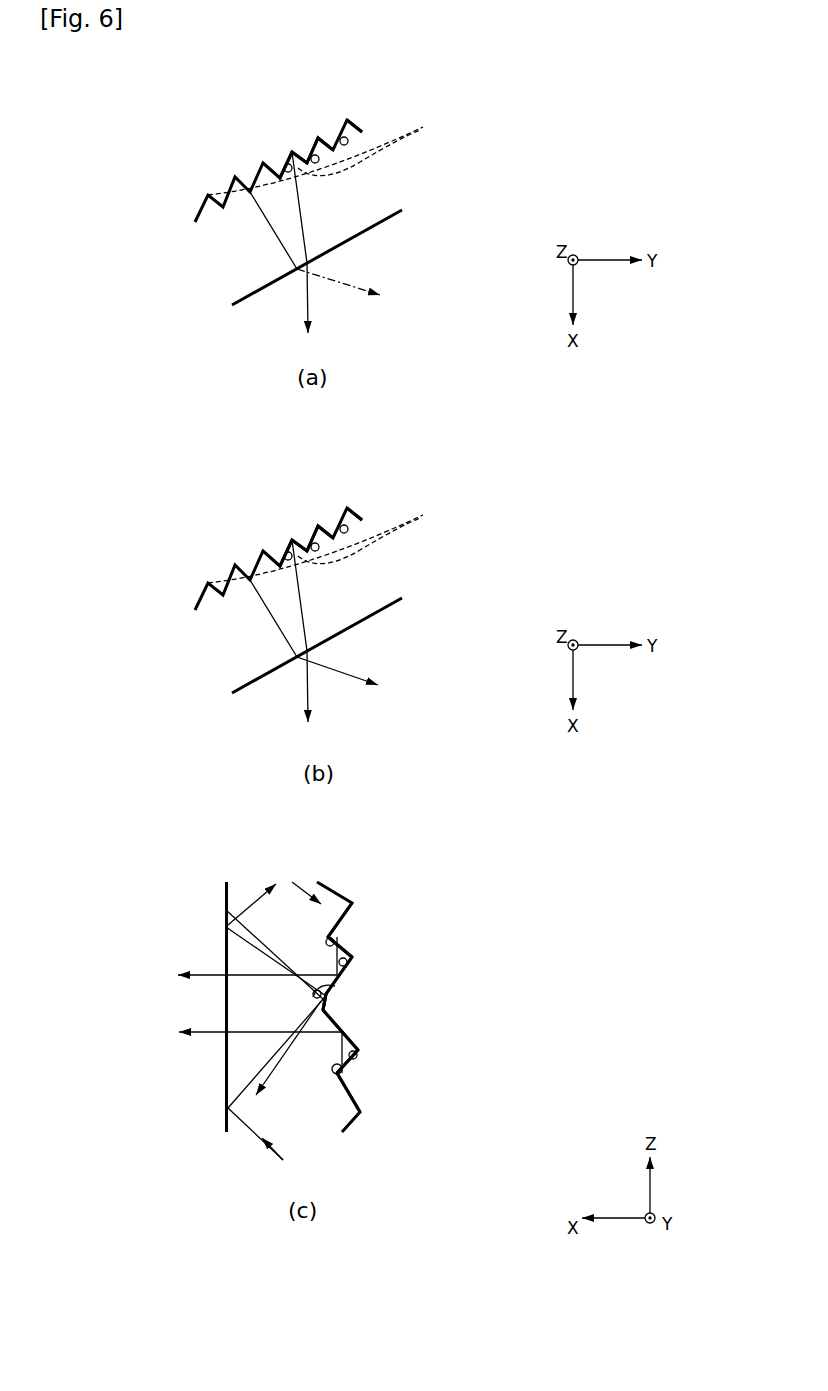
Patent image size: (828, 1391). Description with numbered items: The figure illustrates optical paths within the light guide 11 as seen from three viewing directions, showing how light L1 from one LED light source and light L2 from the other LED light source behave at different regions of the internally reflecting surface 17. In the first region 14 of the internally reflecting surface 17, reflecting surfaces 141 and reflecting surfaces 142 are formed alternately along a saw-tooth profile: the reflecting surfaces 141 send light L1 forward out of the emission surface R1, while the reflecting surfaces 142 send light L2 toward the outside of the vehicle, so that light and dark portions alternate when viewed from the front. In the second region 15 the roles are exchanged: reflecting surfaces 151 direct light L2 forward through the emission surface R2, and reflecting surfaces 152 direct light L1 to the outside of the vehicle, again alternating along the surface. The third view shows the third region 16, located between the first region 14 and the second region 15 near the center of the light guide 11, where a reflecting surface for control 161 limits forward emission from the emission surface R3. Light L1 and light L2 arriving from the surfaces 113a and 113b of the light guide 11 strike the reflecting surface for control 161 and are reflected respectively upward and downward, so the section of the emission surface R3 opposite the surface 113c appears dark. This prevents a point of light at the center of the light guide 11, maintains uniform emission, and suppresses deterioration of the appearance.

The light guide 11 is at (245, 308).
The first region 14 is at (237, 162).
The reflecting surfaces 141 is at (286, 164).
The reflecting surfaces 142 is at (420, 129).
The second region 15 is at (246, 556).
The reflecting surfaces 151 is at (286, 552).
The reflecting surfaces 152 is at (420, 517).
The third region 16 is at (334, 1003).
The reflecting surface for control 161 is at (337, 987).
The internally reflecting surface 17 is at (396, 999).
The first reflecting surface of light guide 113a is at (226, 892).
The second reflecting surface of light guide 113b is at (227, 1127).
The third surface of light guide 113c is at (226, 1002).
The light from the LED light source L1 is at (288, 153).
The light from the LED light source L2 is at (210, 196).
The emission surface R1 is at (363, 232).
The emission surface R2 is at (377, 613).
The emission surface R3 is at (170, 992).